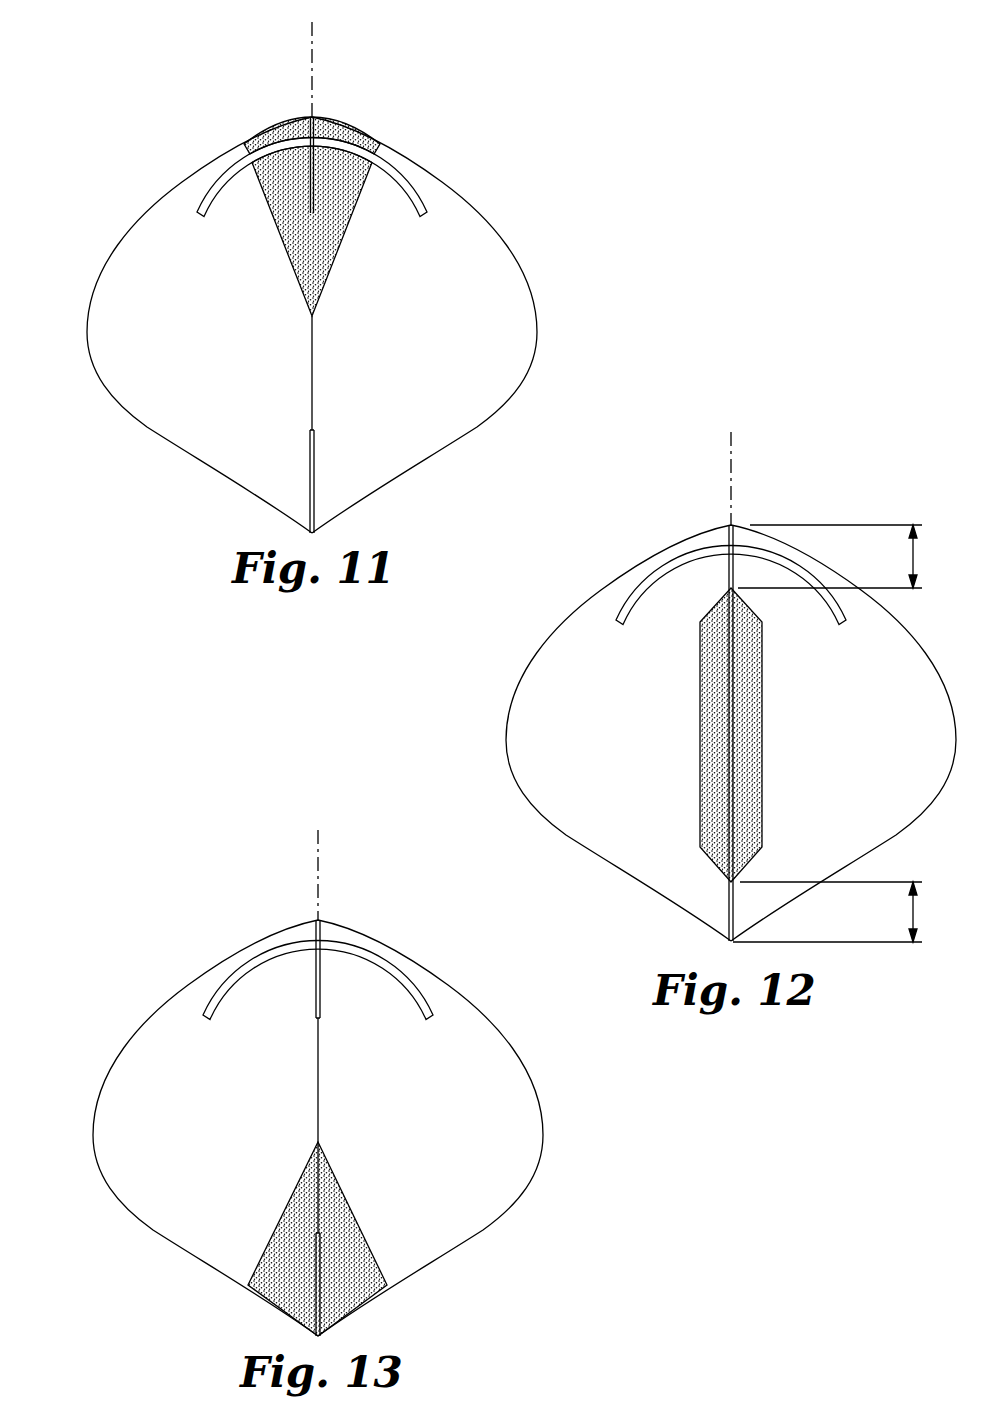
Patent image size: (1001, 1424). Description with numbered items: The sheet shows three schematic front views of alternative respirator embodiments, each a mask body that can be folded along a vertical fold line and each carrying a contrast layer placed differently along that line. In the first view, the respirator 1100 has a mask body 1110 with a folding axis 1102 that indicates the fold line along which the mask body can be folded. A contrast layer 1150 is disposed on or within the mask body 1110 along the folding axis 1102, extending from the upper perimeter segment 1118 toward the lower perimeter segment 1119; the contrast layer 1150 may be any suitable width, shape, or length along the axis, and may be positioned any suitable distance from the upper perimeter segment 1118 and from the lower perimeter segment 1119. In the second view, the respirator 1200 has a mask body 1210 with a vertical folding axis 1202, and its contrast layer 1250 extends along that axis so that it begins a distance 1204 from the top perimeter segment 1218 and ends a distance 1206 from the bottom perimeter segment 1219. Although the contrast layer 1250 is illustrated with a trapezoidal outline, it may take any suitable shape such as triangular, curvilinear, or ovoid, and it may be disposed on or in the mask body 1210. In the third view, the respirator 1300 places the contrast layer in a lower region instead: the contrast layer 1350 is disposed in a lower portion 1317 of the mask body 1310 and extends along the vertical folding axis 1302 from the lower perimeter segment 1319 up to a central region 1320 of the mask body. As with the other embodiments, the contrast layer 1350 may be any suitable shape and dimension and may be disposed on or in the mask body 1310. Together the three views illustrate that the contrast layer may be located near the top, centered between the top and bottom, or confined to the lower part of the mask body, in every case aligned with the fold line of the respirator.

In FIG. 11, the respirator 1100 is at (425, 127).
In FIG. 11, the folding axis 1102 is at (313, 43).
In FIG. 11, the mask body 1110 is at (500, 238).
In FIG. 11, the upper perimeter segment 1118 is at (160, 210).
In FIG. 11, the lower perimeter segment 1119 is at (370, 493).
In FIG. 11, the contrast layer 1150 is at (272, 128).
In FIG. 12, the respirator 1200 is at (806, 486).
In FIG. 12, the vertical folding axis 1202 is at (733, 450).
In FIG. 12, the distance 1204 is at (910, 560).
In FIG. 12, the distance 1206 is at (912, 918).
In FIG. 12, the mask body 1210 is at (530, 663).
In FIG. 12, the top perimeter segment 1218 is at (612, 588).
In FIG. 12, the bottom perimeter segment 1219 is at (673, 905).
In FIG. 12, the contrast layer 1250 is at (689, 540).
In FIG. 13, the respirator 1300 is at (431, 933).
In FIG. 13, the vertical folding axis 1302 is at (319, 848).
In FIG. 13, the mask body 1310 is at (519, 1061).
In FIG. 13, the lower portion 1317 is at (416, 1289).
In FIG. 13, the lower perimeter segment 1319 is at (212, 1272).
In FIG. 13, the central region 1320 is at (338, 1096).
In FIG. 13, the contrast layer 1350 is at (345, 1217).